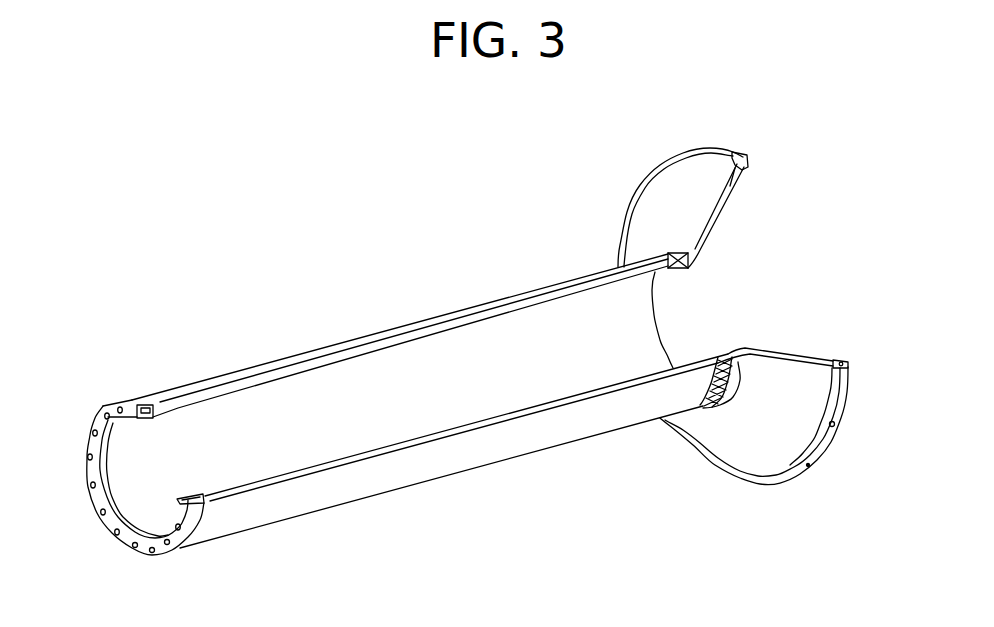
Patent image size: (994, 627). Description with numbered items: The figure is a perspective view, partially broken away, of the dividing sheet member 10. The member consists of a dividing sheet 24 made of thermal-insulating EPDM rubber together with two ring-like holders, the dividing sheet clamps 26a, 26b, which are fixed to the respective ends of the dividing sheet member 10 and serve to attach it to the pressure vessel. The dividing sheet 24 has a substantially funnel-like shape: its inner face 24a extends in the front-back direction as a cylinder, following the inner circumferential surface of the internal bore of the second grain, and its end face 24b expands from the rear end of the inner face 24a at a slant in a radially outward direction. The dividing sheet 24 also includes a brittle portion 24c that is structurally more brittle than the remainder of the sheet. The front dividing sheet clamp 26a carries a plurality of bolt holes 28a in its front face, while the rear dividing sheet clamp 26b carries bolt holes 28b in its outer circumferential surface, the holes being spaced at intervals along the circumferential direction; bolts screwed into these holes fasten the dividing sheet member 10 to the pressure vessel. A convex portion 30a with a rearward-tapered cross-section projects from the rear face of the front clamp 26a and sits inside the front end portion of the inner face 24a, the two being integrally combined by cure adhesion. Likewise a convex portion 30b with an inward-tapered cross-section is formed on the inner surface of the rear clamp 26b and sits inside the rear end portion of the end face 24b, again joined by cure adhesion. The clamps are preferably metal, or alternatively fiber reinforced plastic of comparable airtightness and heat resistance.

The dividing sheet member 10 is at (400, 249).
The dividing sheet 24 is at (605, 263).
The inner face 24a is at (483, 447).
The end face 24b is at (777, 373).
The brittle portion 24c is at (690, 269).
The dividing sheet clamp 26a is at (122, 543).
The dividing sheet clamp 26b is at (840, 393).
The bolt holes 28a is at (91, 430).
The bolt holes 28b is at (833, 427).
The convex portion 30a is at (155, 409).
The convex portion 30b is at (746, 166).